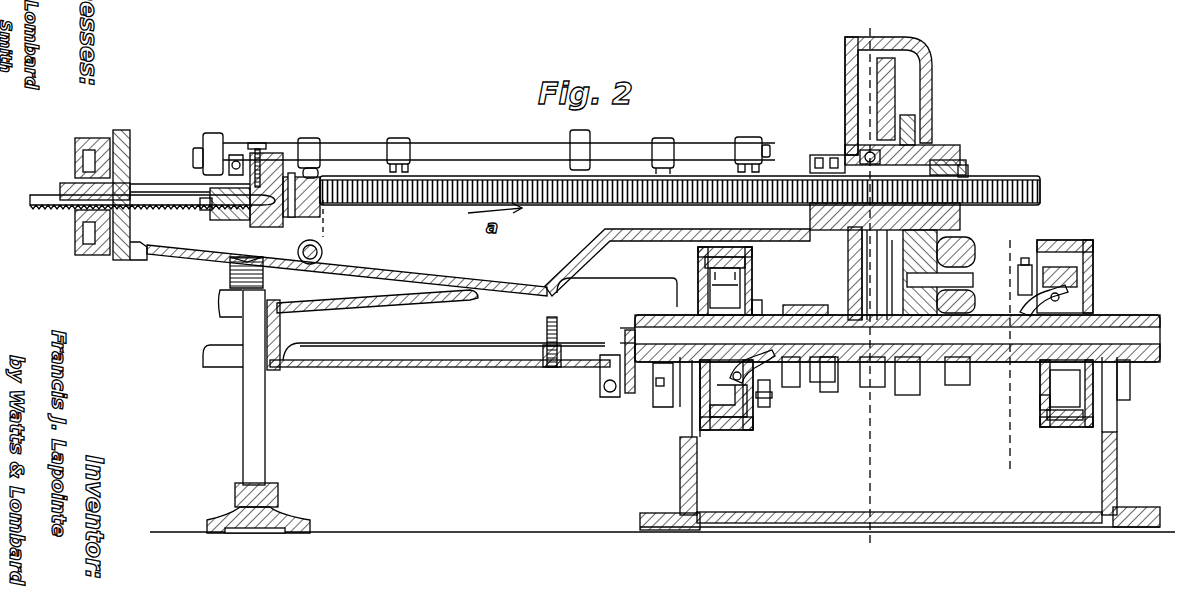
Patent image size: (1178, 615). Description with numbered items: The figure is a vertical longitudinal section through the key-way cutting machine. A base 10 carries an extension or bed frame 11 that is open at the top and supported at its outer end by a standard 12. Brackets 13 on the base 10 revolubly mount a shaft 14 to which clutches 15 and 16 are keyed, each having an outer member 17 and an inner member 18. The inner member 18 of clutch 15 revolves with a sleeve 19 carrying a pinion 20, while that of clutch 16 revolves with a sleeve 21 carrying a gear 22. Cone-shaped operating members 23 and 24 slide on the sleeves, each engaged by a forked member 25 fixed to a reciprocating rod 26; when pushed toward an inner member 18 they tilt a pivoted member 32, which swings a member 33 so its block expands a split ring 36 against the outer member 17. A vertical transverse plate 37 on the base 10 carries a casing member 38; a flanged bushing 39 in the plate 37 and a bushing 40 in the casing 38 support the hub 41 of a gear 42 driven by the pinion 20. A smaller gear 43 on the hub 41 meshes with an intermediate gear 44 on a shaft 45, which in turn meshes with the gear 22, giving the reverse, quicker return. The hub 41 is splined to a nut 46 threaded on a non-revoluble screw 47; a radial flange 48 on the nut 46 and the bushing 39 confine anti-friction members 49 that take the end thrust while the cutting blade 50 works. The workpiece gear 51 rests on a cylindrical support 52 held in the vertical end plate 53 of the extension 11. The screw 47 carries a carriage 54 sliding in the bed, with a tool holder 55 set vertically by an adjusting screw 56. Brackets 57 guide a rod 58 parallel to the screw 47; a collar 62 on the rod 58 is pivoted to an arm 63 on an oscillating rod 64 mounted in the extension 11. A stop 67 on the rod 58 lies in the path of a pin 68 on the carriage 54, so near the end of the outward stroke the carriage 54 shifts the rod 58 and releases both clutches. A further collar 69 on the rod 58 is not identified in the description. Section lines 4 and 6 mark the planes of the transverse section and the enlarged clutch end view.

The section line 4 is at (880, 25).
The section line 6 is at (1042, 240).
The base 10 is at (690, 478).
The extension or bed frame 11 is at (507, 289).
The standard 12 is at (258, 432).
The brackets 13 is at (662, 378).
The shaft 14 is at (1122, 330).
The clutch 15 is at (720, 428).
The clutch 16 is at (1062, 427).
The outer member 17 is at (698, 258).
The inner member 18 is at (752, 280).
The sleeve 19 is at (758, 320).
The pinion 20 is at (905, 380).
The sleeve 21 is at (975, 375).
The gear 22 is at (920, 385).
The cone-shaped clutch operating member 23 is at (805, 312).
The clutch operating member 24 is at (956, 306).
The forked member 25 is at (822, 385).
The reciprocating rod 26 is at (945, 380).
The pivoted member 32 is at (770, 370).
The pivoted member 33 is at (768, 398).
The split ring 36 is at (746, 260).
The vertical transverse plate 37 is at (845, 86).
The casing member 38 is at (932, 70).
The cylindrical flanged bushing 39 is at (824, 155).
The bushing 40 is at (958, 147).
The hub 41 is at (966, 162).
The gear 42 is at (896, 95).
The smaller gear 43 is at (916, 130).
The intermediate gear 44 is at (950, 266).
The shaft 45 is at (962, 280).
The nut 46 is at (968, 170).
The non-revoluble screw 47 is at (1025, 176).
The radial flange 48 is at (866, 150).
The anti-friction members 49 is at (855, 235).
The cutting blade 50 is at (60, 206).
The gear 51 is at (97, 140).
The cylindrical support 52 is at (70, 186).
The vertical end plate 53 is at (131, 152).
The carriage 54 is at (278, 222).
The tool holder 55 is at (236, 215).
The adjusting screw 56 is at (257, 143).
The brackets 57 is at (395, 140).
The rod 58 is at (487, 148).
The collar 62 is at (310, 140).
The arm 63 is at (325, 225).
The oscillating rod 64 is at (307, 262).
The stop 67 is at (213, 133).
The projecting pin 68 is at (238, 155).
The collar 69 is at (585, 136).